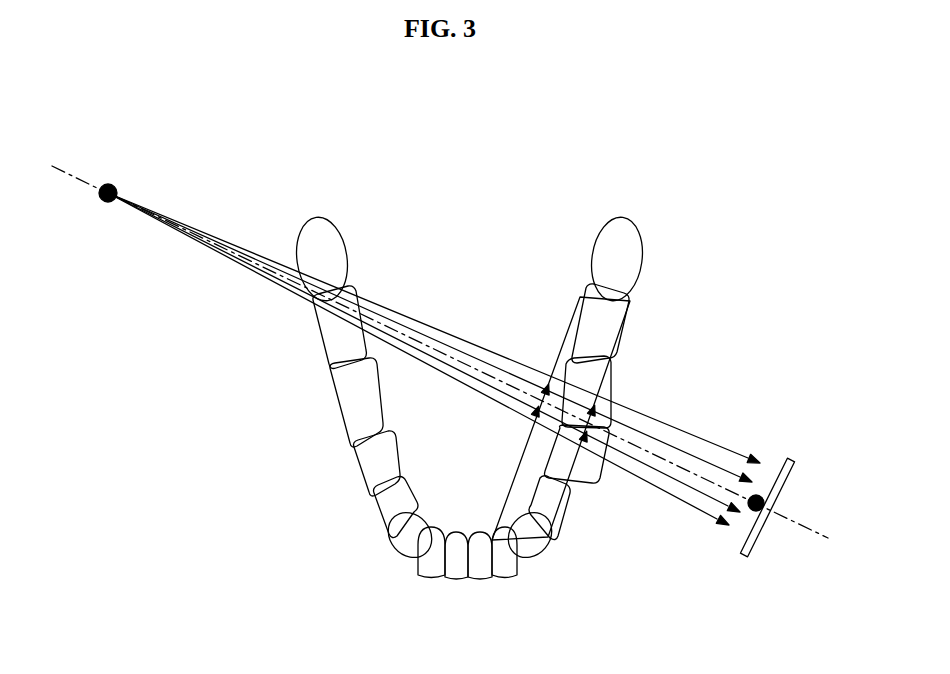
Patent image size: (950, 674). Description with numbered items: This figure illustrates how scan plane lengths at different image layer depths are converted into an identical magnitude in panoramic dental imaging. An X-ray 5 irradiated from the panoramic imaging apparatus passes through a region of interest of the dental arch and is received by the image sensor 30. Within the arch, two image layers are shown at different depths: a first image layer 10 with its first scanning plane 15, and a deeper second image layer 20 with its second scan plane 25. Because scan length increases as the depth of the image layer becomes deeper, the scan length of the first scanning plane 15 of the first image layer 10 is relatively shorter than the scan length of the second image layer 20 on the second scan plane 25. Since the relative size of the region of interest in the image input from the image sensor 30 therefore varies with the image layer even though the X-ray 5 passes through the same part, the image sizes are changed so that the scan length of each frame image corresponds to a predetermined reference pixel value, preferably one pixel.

The X-ray 5 is at (114, 183).
The first image layer 10 is at (506, 494).
The first scanning plane 15 is at (545, 387).
The second image layer 20 is at (474, 399).
The second scan plane 25 is at (598, 420).
The image sensor 30 is at (760, 533).